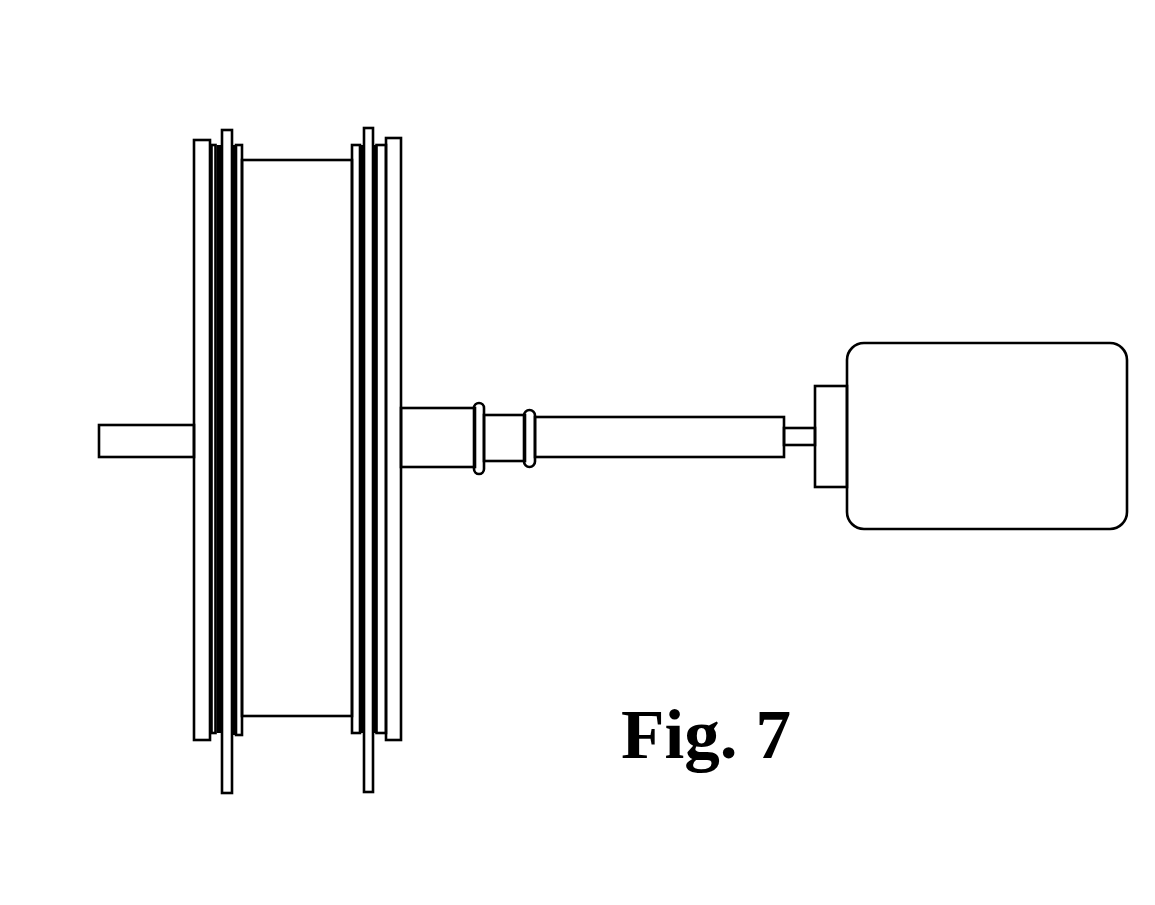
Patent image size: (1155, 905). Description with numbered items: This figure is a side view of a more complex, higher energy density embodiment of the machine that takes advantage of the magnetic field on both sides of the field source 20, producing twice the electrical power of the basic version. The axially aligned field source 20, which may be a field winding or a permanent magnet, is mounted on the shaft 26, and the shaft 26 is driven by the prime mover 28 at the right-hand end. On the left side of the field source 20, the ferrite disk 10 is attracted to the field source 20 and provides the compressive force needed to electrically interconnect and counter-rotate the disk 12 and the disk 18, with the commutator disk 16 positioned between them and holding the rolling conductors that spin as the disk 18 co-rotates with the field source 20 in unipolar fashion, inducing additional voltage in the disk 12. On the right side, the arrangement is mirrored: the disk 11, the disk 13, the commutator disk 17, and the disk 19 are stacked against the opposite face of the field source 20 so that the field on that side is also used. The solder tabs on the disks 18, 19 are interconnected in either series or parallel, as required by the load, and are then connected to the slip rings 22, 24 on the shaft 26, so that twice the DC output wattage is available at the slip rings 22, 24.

The disk 10 is at (173, 401).
The disk 11 is at (423, 387).
The disk 12 is at (196, 379).
The disk 13 is at (403, 493).
The commutator disk 16 is at (247, 402).
The commutator disk 17 is at (392, 506).
The disk 18 is at (260, 406).
The disk 19 is at (338, 387).
The field source 20 is at (285, 523).
The slip ring 22 is at (502, 370).
The slip ring 24 is at (557, 395).
The shaft 26 is at (659, 383).
The prime mover 28 is at (987, 364).